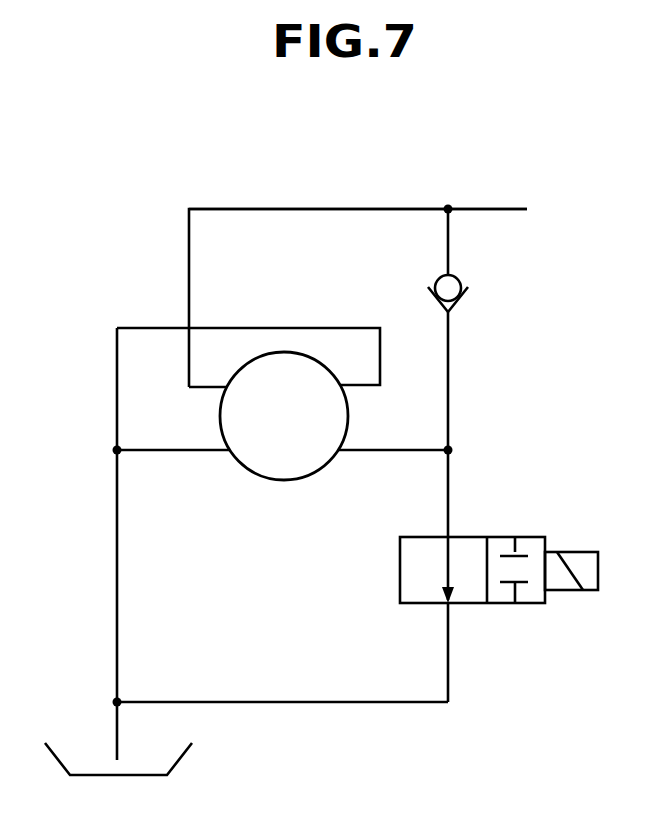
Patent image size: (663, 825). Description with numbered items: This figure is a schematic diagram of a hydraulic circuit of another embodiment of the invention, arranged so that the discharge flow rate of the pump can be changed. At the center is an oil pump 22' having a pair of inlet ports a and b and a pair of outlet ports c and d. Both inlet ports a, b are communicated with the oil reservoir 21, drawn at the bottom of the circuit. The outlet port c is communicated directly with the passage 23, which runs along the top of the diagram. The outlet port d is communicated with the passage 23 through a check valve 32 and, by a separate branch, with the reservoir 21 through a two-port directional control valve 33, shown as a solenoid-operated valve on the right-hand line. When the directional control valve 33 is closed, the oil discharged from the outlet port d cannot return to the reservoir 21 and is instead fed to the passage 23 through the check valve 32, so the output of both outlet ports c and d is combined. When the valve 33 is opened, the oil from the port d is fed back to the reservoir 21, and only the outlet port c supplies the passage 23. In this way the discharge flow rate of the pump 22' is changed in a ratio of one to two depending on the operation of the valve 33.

The oil reservoir 21 is at (180, 758).
The oil pump 22' is at (284, 457).
The passage 23 is at (367, 209).
The check valve 32 is at (466, 282).
The two-port directional control valve 33 is at (528, 603).
The inlet port a is at (226, 452).
The inlet port b is at (340, 384).
The outlet port c is at (228, 386).
The outlet port d is at (338, 452).